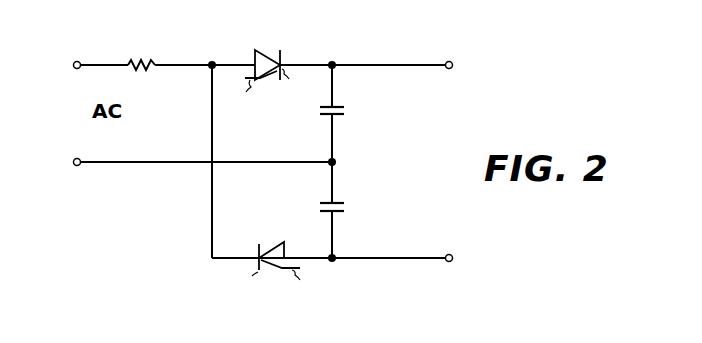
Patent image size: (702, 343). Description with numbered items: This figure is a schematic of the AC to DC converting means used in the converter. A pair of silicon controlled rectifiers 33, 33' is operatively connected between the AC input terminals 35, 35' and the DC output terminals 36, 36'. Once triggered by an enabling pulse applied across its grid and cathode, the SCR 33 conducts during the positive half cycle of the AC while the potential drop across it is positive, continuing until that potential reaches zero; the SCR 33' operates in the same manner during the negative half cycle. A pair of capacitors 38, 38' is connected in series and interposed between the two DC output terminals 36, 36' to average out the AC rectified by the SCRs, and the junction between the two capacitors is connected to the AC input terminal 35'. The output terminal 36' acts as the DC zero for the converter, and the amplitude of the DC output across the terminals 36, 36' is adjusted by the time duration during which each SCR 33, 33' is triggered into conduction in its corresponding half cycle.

The silicon controlled rectifier 33 is at (272, 61).
The silicon controlled rectifier 33' is at (272, 254).
The AC input terminal 35 is at (58, 84).
The AC input terminal 35' is at (57, 181).
The DC output terminal 36 is at (433, 84).
The DC output terminal 36' is at (431, 277).
The capacitor 38 is at (351, 127).
The capacitor 38' is at (354, 223).